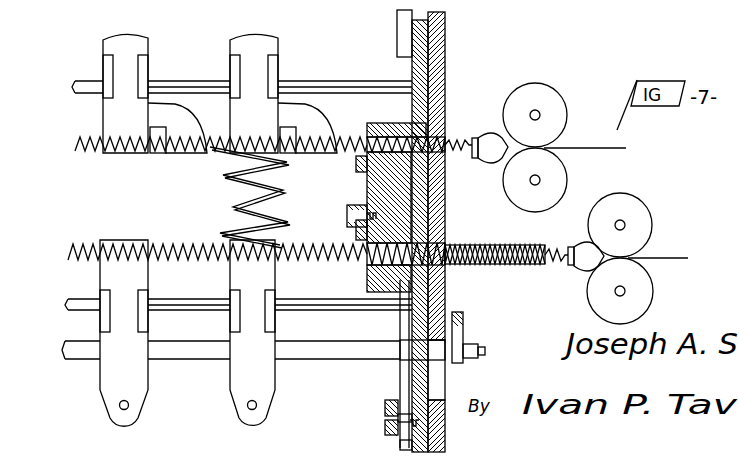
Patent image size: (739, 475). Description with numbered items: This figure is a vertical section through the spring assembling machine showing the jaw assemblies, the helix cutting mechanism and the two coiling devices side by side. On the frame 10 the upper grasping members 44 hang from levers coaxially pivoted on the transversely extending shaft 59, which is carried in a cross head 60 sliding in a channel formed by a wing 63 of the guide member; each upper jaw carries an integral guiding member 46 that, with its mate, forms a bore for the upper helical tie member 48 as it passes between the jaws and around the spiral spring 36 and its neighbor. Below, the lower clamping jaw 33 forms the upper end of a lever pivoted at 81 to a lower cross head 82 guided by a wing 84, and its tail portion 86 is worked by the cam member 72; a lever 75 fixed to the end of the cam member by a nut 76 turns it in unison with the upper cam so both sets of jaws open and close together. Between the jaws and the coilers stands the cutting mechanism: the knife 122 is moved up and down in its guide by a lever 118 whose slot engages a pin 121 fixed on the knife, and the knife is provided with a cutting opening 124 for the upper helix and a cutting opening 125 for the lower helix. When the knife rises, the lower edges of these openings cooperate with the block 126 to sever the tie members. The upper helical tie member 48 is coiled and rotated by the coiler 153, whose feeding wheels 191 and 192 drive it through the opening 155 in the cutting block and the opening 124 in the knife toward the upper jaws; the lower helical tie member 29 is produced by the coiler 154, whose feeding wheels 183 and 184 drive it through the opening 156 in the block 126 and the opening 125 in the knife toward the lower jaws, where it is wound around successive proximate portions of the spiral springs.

The frame 10 is at (447, 52).
The helical tie member 29 is at (512, 248).
The clamping jaw 33 is at (240, 271).
The spiral spring 36 is at (228, 172).
The grasping member 44 is at (110, 118).
The guiding member 46 is at (307, 130).
The helical tie member 48 is at (447, 138).
The transversely extending shaft 59 is at (338, 82).
The cross head 60 is at (422, 62).
The wing 63 is at (398, 24).
The cam member 72 is at (318, 352).
The lever 75 is at (462, 340).
The nut 76 is at (486, 352).
The pivot 81 is at (326, 304).
The cross head 82 is at (432, 386).
The wing 84 is at (398, 375).
The tail portion 86 is at (240, 382).
The lever 118 is at (356, 228).
The pin 121 is at (347, 214).
The knife 122 is at (358, 166).
The cutting opening 124 is at (366, 134).
The cutting opening 125 is at (368, 260).
The block 126 is at (410, 209).
The coiler 153 is at (556, 143).
The coiler 154 is at (658, 257).
The opening 155 is at (446, 125).
The opening 156 is at (400, 270).
The feeding wheel 183 is at (638, 205).
The feeding wheel 184 is at (652, 291).
The feeding wheel 191 is at (557, 181).
The feeding wheel 192 is at (541, 97).